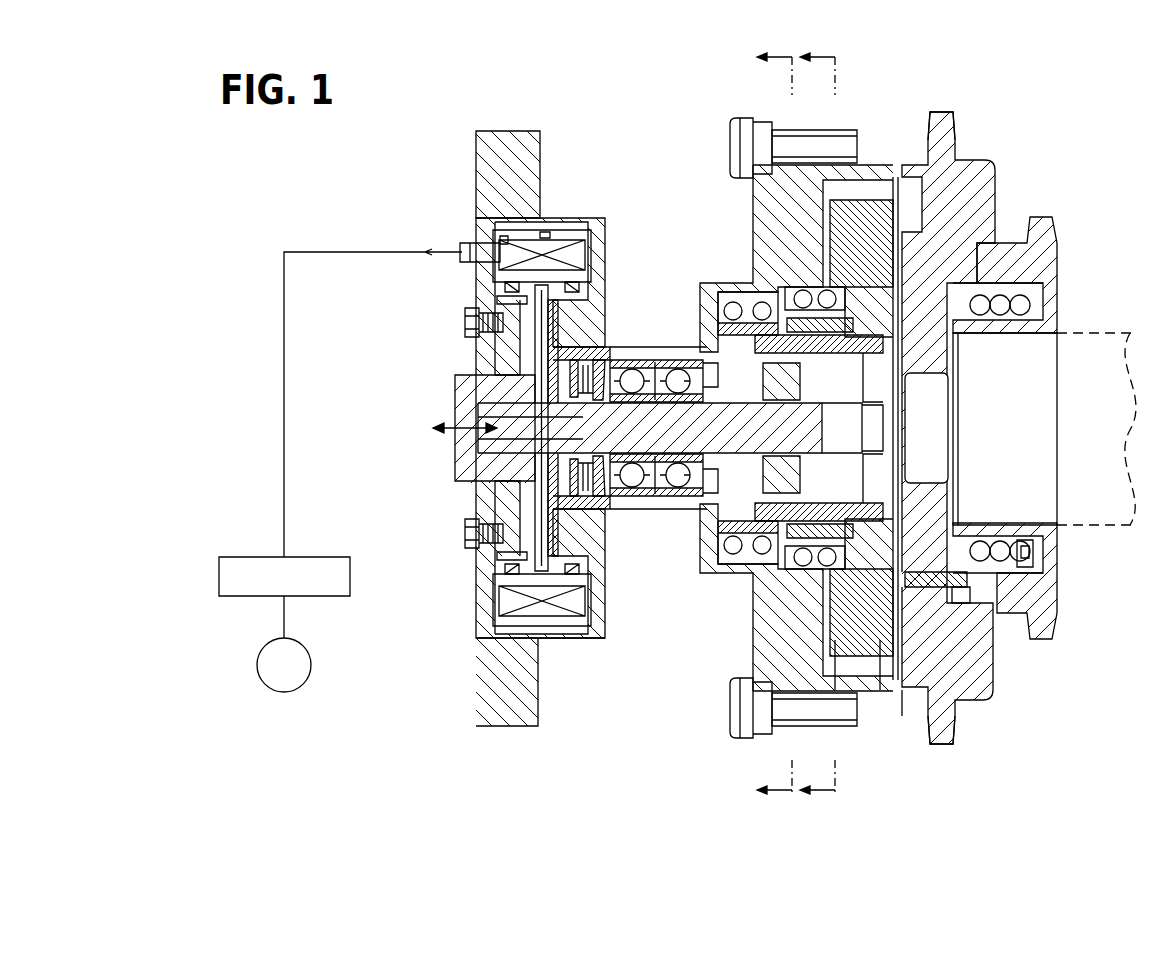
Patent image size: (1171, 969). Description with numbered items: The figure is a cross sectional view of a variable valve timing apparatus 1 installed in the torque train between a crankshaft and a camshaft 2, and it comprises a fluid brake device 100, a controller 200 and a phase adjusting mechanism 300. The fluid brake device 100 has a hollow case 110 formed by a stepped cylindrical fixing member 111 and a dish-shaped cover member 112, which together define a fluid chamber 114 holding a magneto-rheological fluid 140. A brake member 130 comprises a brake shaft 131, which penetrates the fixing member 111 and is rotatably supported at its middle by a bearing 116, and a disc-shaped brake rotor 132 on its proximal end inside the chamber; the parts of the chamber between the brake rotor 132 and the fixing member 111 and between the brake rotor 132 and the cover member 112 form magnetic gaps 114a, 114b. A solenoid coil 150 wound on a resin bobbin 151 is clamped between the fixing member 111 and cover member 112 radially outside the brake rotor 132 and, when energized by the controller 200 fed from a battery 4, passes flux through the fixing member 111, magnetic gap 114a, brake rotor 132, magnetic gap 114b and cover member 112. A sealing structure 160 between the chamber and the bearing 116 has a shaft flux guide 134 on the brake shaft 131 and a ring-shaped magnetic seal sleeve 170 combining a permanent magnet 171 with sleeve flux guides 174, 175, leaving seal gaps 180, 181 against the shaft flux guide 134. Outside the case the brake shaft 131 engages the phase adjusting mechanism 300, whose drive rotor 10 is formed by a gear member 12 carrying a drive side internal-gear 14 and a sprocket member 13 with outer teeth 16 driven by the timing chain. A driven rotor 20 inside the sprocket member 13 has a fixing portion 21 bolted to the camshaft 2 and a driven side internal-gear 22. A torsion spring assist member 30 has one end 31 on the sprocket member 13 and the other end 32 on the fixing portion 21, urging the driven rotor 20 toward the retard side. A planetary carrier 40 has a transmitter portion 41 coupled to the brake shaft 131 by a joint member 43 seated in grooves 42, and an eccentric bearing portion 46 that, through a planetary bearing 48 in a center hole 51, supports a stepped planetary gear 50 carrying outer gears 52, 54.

The variable valve timing apparatus 1 is at (690, 782).
The camshaft 2 is at (1105, 540).
The battery 4 is at (280, 693).
The drive rotor 10 is at (766, 386).
The gear member 12 is at (735, 128).
The sprocket member 13 is at (795, 130).
The drive side internal-gear 14 is at (790, 600).
The teeth 16 is at (945, 128).
The driven rotor 20 is at (977, 440).
The fixing portion 21 is at (962, 604).
The driven side internal-gear 22 is at (925, 695).
The assist member 30 is at (1003, 578).
The one end 31 is at (1036, 568).
The other end 32 is at (968, 588).
The planetary carrier 40 is at (1005, 215).
The transmitter portion 41 is at (760, 522).
The grooves 42 is at (855, 418).
The joint member 43 is at (782, 362).
The bearing portion 46 is at (745, 592).
The planetary bearing 48 is at (896, 215).
The planetary gear 50 is at (880, 447).
The center hole 51 is at (866, 245).
The outer gear 52 is at (862, 670).
The outer gear 54 is at (895, 670).
The fluid brake device 100 is at (532, 742).
The case 110 is at (461, 428).
The fixing member 111 is at (483, 165).
The cover member 112 is at (483, 232).
The fluid chamber 114 is at (505, 383).
The magnetic gap 114a is at (548, 288).
The magnetic gap 114b is at (505, 300).
The bearing 116 is at (652, 498).
The brake member 130 is at (569, 428).
The brake shaft 131 is at (583, 417).
The brake rotor 132 is at (541, 345).
The shaft flux guide 134 is at (657, 362).
The magneto-rheological fluid 140 is at (478, 540).
The solenoid coil 150 is at (543, 248).
The resin bobbin 151 is at (517, 262).
The sealing structure 160 is at (472, 432).
The magnetic seal sleeve 170 is at (656, 348).
The permanent magnet 171 is at (600, 358).
The sleeve flux guide 174 is at (640, 358).
The sleeve flux guide 175 is at (578, 362).
The seal gap 180 is at (592, 512).
The seal gap 181 is at (586, 495).
The controller 200 is at (318, 598).
The phase adjusting mechanism 300 is at (718, 751).